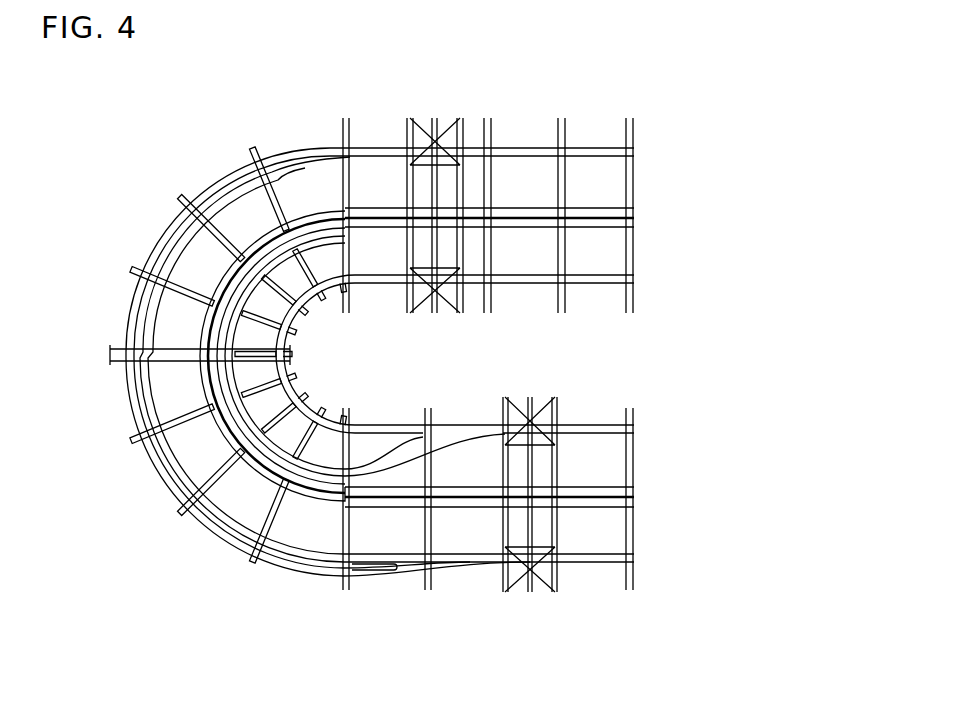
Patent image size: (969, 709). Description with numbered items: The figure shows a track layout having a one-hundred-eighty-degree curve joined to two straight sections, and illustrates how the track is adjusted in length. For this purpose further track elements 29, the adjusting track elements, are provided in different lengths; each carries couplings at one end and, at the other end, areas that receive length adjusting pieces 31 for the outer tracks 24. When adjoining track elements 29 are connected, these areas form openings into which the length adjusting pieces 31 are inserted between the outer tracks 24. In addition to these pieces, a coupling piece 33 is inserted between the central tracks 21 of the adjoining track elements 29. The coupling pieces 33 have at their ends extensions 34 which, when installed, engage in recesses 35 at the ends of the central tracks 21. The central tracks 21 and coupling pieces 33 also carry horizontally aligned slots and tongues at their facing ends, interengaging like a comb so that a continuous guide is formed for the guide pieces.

The central track 21 is at (207, 341).
The outer track 24 is at (290, 165).
The adjusting track element 29 is at (508, 138).
The length adjusting piece 31 is at (412, 166).
The coupling piece 33 is at (447, 215).
The extension 34 is at (410, 165).
The recess 35 is at (414, 214).